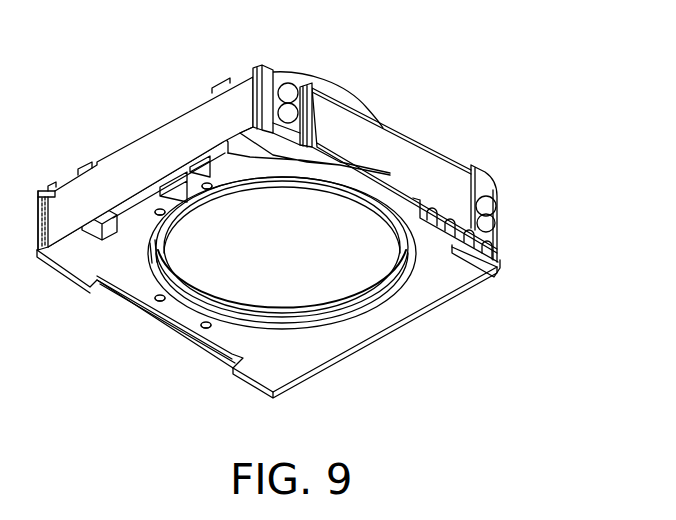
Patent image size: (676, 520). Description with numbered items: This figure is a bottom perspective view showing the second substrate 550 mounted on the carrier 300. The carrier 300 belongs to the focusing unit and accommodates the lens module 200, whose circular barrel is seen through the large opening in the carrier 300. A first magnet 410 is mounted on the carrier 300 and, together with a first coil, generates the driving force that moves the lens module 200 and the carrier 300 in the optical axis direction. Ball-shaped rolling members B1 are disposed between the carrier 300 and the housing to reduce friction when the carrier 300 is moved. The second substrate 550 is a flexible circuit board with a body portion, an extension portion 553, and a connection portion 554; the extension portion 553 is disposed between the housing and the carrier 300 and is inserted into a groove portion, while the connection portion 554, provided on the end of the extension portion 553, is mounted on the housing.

The second substrate 550 is at (150, 139).
The lens module 200 is at (324, 72).
The first magnet 410 is at (398, 158).
The extension portion 553 is at (392, 197).
The rolling members B1 is at (492, 206).
The connection portion 554 is at (490, 250).
The carrier 300 is at (430, 290).